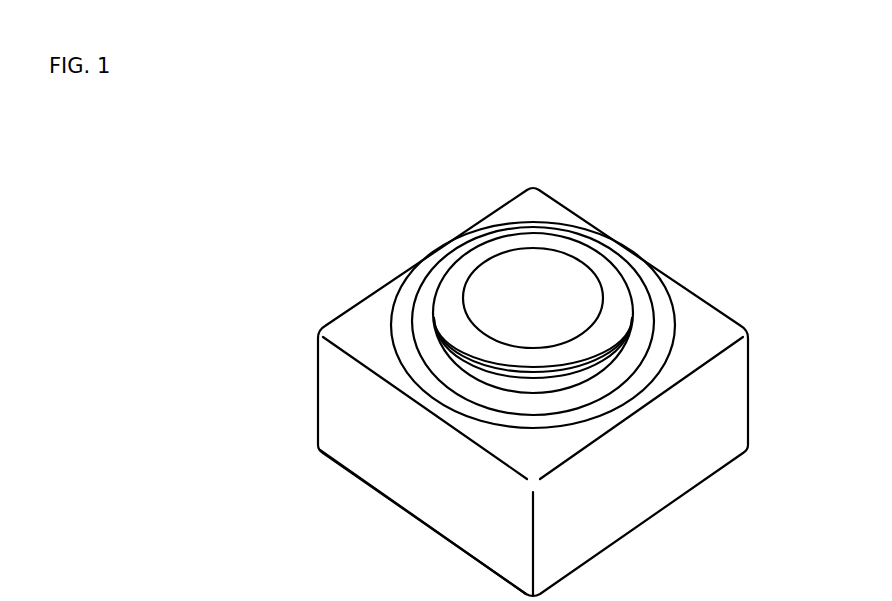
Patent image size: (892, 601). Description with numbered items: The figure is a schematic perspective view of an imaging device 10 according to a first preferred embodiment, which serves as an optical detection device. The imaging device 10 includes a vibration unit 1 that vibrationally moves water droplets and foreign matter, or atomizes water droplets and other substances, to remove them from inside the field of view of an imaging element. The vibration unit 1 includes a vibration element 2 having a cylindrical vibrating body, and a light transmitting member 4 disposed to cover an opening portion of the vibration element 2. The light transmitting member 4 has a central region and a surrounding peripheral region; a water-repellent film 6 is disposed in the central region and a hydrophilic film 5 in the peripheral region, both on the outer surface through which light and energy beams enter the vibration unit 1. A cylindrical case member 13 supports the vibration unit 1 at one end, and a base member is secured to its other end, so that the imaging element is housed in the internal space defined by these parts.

The imaging device 10 is at (535, 345).
The vibration unit 1 is at (501, 393).
The vibration element 2 is at (562, 403).
The light transmitting member 4 is at (628, 328).
The hydrophilic film 5 is at (492, 245).
The water-repellent film 6 is at (527, 268).
The case member 13 is at (395, 507).